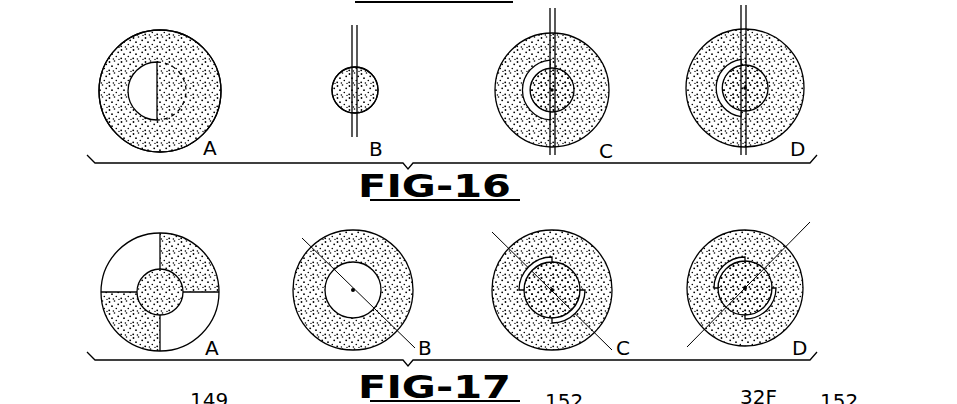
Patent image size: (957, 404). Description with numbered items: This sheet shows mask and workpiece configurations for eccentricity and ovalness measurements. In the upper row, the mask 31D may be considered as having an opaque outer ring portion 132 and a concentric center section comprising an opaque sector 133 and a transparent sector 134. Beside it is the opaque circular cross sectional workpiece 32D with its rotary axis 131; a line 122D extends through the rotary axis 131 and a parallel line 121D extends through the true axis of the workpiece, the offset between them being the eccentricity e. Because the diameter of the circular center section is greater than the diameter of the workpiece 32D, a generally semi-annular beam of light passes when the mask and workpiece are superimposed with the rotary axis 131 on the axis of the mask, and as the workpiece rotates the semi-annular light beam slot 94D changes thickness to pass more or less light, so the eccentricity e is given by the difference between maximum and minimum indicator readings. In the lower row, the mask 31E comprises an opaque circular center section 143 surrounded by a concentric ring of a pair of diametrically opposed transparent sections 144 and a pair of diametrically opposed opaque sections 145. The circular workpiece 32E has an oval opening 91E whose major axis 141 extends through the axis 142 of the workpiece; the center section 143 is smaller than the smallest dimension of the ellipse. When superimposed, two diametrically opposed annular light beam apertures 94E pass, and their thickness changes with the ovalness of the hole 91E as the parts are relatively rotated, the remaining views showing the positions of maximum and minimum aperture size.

In FIG. 16, the mask 31D is at (222, 88).
In FIG. 16, the workpiece 32D is at (374, 108).
In FIG. 16, the rotary axis 131 is at (353, 88).
In FIG. 16, the opaque outer ring portion 132 is at (124, 52).
In FIG. 16, the opaque sector 133 is at (175, 77).
In FIG. 16, the transparent sector 134 is at (140, 98).
In FIG. 16, the line 121D is at (360, 52).
In FIG. 16, the line 122D is at (350, 50).
In FIG. 16, the eccentricity e is at (330, 32).
In FIG. 16, the semi-annular light beam slot 94D is at (525, 98).
In FIG. 17, the mask 31E is at (210, 327).
In FIG. 17, the circular workpiece 32E is at (410, 322).
In FIG. 17, the oval opening 91E is at (378, 290).
In FIG. 17, the light beam apertures 94E is at (528, 277).
In FIG. 17, the major axis 141 is at (302, 238).
In FIG. 17, the axis 142 is at (355, 288).
In FIG. 17, the opaque circular center section 143 is at (148, 274).
In FIG. 17, the transparent sections 144 is at (113, 262).
In FIG. 17, the opaque sections 145 is at (193, 253).